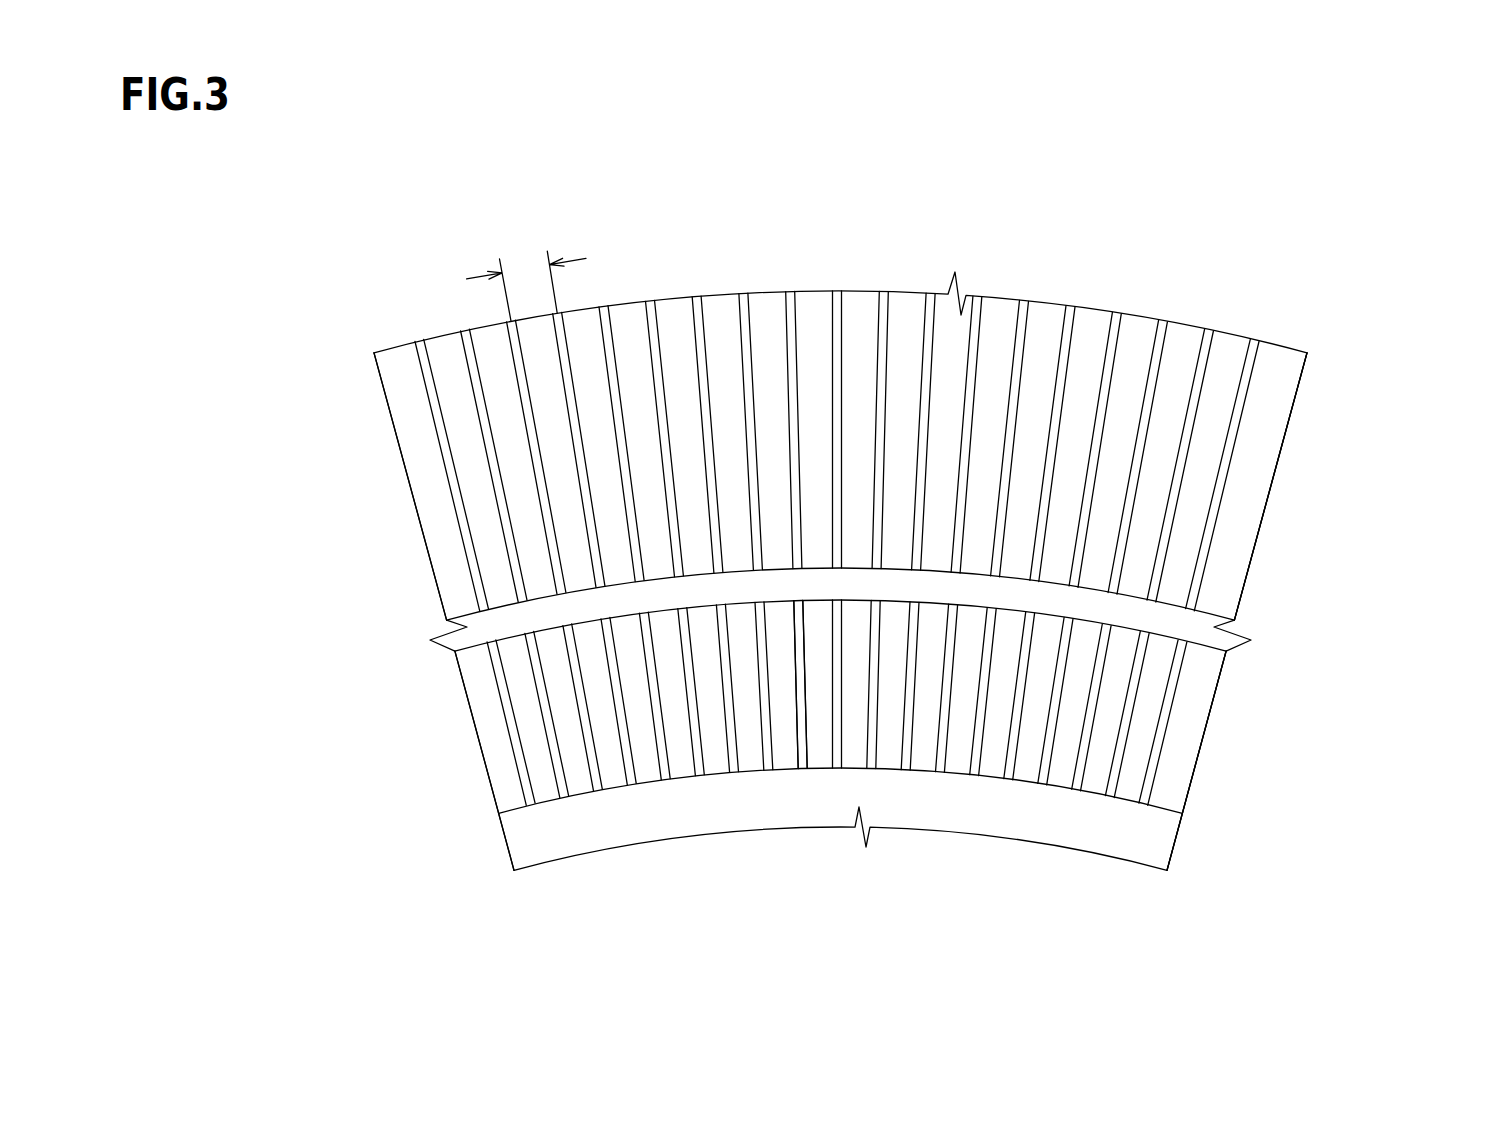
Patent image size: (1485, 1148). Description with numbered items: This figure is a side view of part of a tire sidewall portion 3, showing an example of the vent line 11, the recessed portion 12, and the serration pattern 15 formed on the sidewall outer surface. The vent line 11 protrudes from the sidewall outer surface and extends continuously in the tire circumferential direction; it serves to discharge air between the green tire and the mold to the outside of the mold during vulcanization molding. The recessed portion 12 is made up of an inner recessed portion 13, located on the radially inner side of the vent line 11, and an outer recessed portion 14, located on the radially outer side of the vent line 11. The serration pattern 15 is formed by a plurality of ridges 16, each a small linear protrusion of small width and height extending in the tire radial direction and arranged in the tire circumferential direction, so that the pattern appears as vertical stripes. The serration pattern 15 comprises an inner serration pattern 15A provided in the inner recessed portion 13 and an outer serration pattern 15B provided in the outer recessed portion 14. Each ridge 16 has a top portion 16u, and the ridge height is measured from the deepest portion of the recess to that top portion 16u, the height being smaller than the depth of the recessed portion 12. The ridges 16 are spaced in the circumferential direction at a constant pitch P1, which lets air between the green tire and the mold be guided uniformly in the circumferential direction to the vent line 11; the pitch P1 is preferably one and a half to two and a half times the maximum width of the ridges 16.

The sidewall portion 3 is at (852, 564).
The vent line 11 is at (975, 590).
The recessed portion 12 is at (318, 558).
The inner recessed portion 13 is at (469, 699).
The outer recessed portion 14 is at (426, 522).
The serration pattern 15 is at (1363, 558).
The inner serration pattern 15A is at (1212, 699).
The outer serration pattern 15B is at (1255, 522).
The ridge 16 is at (653, 348).
The top portion 16u is at (803, 725).
The pitch P1 is at (526, 275).